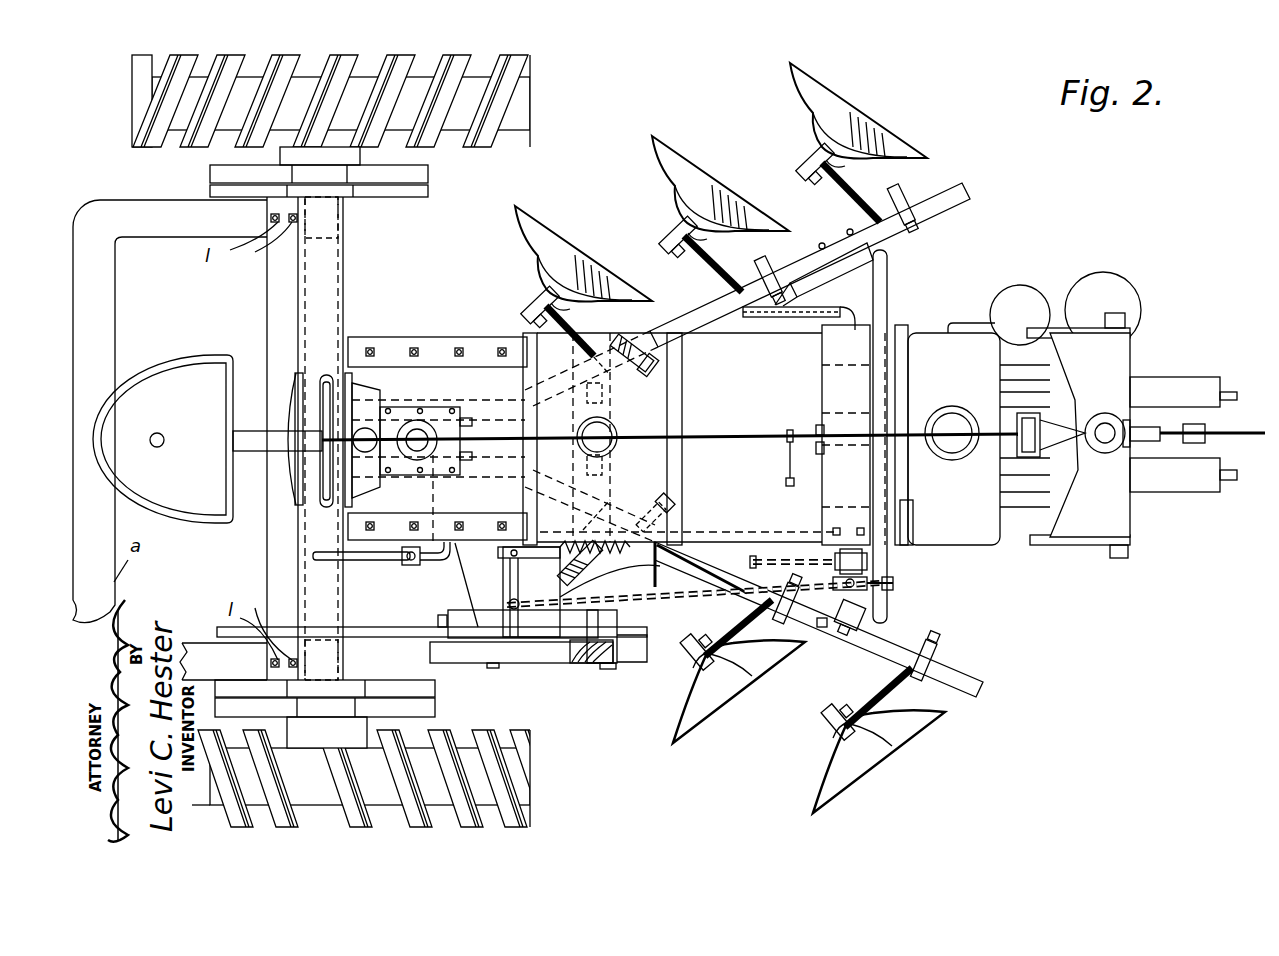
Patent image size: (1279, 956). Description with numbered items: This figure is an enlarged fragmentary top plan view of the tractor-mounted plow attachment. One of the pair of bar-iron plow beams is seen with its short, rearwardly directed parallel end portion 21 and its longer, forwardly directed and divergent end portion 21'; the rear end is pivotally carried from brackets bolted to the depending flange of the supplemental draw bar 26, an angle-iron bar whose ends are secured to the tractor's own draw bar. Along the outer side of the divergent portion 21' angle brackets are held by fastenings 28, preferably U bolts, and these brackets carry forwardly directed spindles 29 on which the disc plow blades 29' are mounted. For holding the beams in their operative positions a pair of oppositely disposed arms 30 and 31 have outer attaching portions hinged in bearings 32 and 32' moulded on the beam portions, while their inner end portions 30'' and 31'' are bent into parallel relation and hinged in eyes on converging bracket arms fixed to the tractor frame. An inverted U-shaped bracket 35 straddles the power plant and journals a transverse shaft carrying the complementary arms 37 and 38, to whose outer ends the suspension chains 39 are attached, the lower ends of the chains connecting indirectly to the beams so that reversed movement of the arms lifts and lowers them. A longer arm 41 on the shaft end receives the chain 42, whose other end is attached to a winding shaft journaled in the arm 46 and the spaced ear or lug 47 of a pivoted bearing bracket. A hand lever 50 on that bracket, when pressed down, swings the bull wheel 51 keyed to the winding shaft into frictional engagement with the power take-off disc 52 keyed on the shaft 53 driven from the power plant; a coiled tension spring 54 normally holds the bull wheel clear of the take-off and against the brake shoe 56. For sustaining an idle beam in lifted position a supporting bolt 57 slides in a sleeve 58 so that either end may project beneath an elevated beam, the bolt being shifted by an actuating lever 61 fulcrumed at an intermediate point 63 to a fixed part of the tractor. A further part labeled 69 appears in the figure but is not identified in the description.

The parallel end portion of plow beam 21 is at (438, 459).
The divergent end portion of plow beam 21' is at (810, 251).
The supplemental draw bar 26 is at (282, 318).
The fastenings 28 is at (890, 216).
The spindles 29 is at (752, 456).
The disc plow blades 29' is at (730, 438).
The arm 30 is at (905, 533).
The inner end portion of arm 30'' is at (801, 471).
The arm 31 is at (897, 436).
The inner end portion of arm 31'' is at (796, 442).
The bearing 32 is at (841, 631).
The bearing 32' is at (861, 263).
The inverted U-shaped bracket 35 is at (832, 380).
The arm 37 is at (755, 560).
The arm 38 is at (799, 306).
The chains 39 is at (812, 560).
The longer arm 41 is at (895, 584).
The chain 42 is at (700, 600).
The arm of bearing bracket 46 is at (507, 604).
The ear or lug 47 is at (503, 558).
The hand lever 50 is at (402, 620).
The bull wheel 51 is at (466, 664).
The power take-off disc 52 is at (502, 664).
The shaft 53 is at (497, 668).
The tension device 54 is at (598, 552).
The brake shoe 56 is at (592, 665).
The supporting bolt 57 is at (602, 393).
The sleeve 58 is at (614, 472).
The actuating lever 61 is at (372, 560).
The fulcrum 63 is at (421, 567).
The beam bracket 69 is at (657, 574).